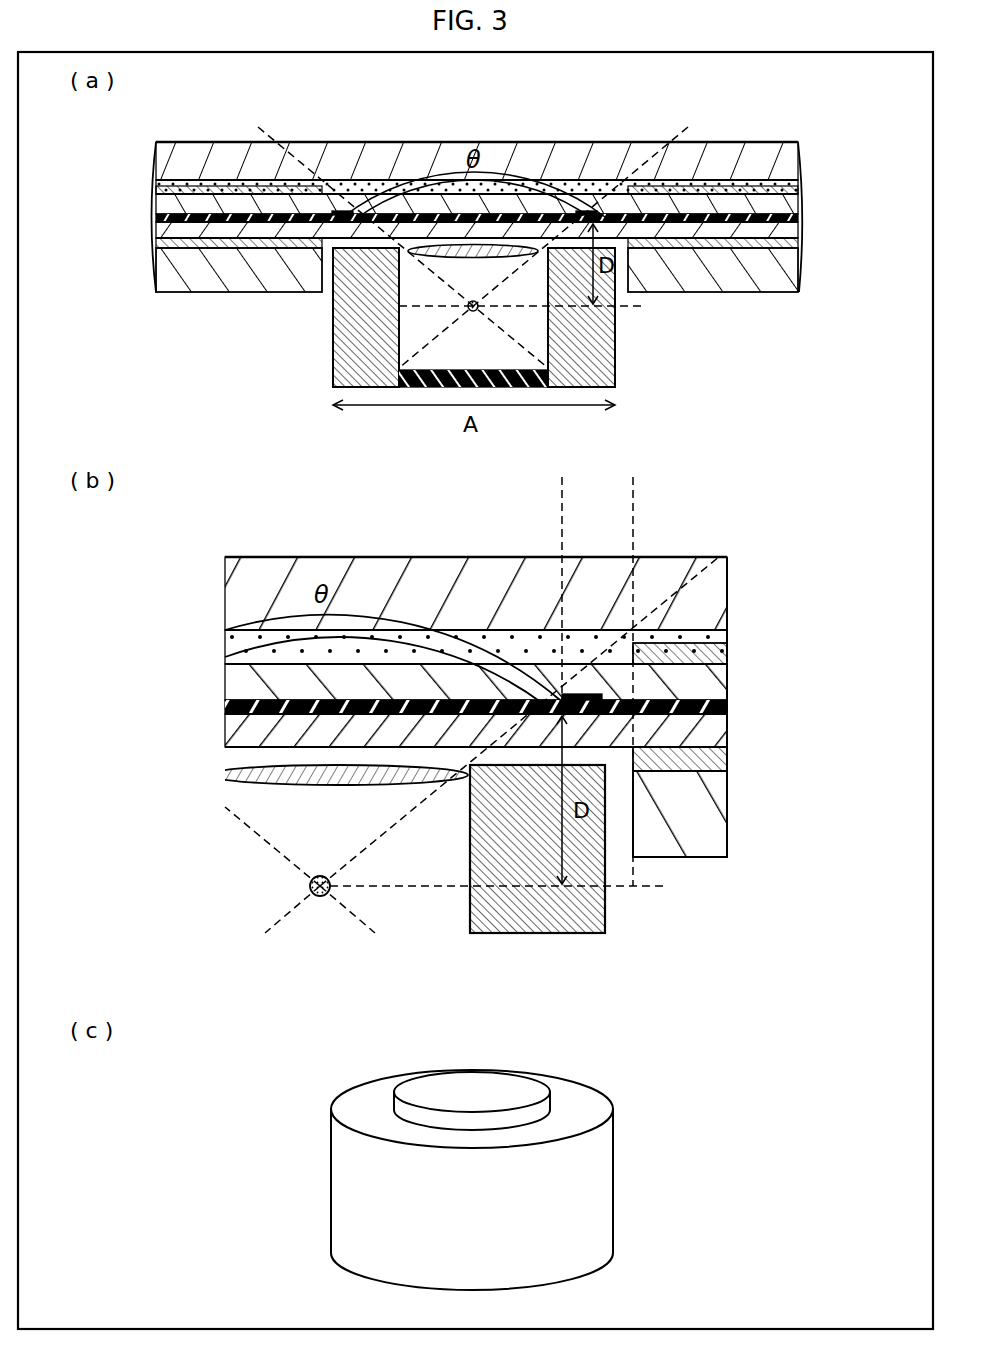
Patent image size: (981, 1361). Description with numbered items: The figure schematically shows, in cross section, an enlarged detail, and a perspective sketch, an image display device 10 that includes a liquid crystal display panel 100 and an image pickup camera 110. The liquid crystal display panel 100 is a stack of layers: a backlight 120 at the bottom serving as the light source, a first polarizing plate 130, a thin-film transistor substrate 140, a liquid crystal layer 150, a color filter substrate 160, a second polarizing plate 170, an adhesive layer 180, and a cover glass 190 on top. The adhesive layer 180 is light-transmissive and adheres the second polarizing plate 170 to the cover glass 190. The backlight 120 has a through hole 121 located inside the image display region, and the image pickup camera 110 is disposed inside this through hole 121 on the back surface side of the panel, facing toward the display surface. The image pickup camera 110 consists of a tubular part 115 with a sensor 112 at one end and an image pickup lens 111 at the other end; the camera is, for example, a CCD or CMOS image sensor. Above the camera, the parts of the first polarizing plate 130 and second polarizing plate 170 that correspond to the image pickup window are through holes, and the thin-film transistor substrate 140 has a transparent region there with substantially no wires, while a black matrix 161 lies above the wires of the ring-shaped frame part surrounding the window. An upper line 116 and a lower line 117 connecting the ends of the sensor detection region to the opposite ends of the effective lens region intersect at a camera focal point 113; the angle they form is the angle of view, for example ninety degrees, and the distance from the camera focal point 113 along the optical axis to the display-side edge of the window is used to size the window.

The image display device 10 is at (178, 122).
The liquid crystal display panel 100 is at (542, 473).
The image pickup camera 110 is at (464, 767).
The image pickup lens 111 is at (460, 256).
The sensor 112 is at (521, 388).
The camera focal point 113 is at (473, 312).
The tubular part 115 is at (387, 346).
The upper line 116 is at (277, 132).
The lower line 117 is at (672, 137).
The backlight 120 is at (515, 547).
The through hole 121 is at (622, 283).
The first polarizing plate 130 is at (790, 242).
The thin-film transistor (TFT) substrate 140 is at (790, 233).
The liquid crystal layer 150 is at (792, 222).
The color filter substrate 160 is at (793, 207).
The black matrix 161 is at (597, 212).
The second polarizing plate 170 is at (800, 193).
The adhesive layer 180 is at (800, 178).
The cover glass 190 is at (740, 152).